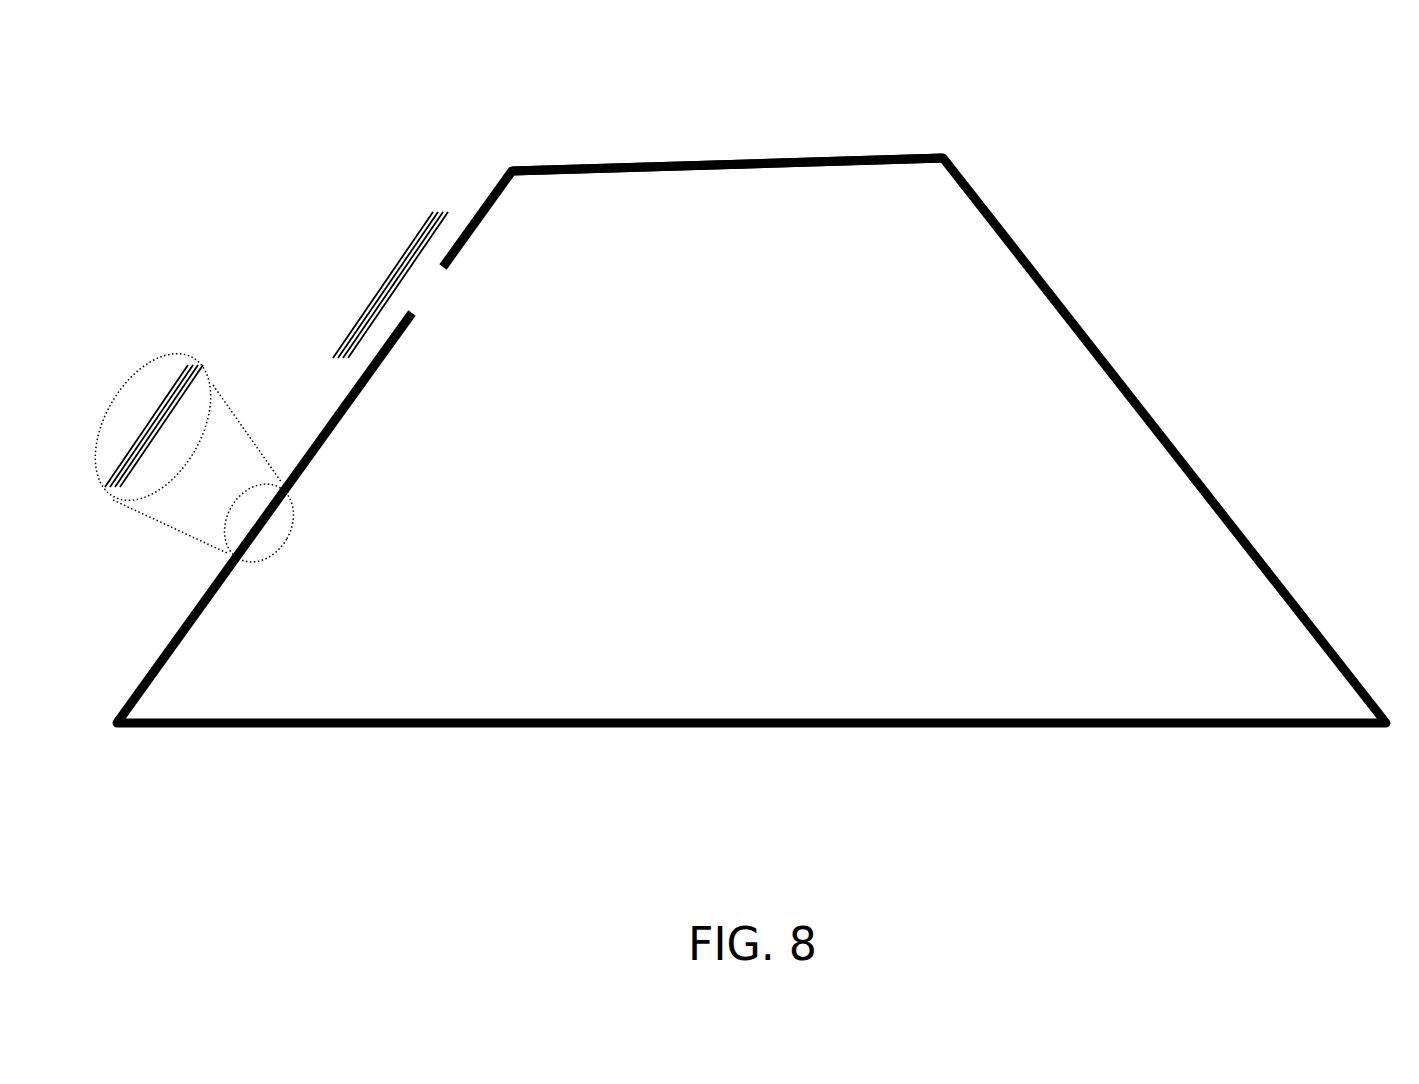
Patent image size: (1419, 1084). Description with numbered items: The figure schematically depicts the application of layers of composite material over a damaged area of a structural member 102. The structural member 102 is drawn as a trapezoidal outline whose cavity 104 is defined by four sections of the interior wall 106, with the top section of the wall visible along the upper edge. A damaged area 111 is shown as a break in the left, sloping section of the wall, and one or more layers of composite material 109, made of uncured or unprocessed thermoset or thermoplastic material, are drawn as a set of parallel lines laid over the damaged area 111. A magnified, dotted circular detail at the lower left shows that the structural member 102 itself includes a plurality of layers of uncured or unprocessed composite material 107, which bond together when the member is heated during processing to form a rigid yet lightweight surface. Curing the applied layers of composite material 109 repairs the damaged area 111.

The structural member 102 is at (1079, 92).
The cavity 104 is at (768, 478).
The interior wall 106 is at (715, 172).
The layers of uncured or unprocessed composite material 107 is at (147, 372).
The layers of composite material 109 is at (374, 243).
The damaged area 111 is at (453, 321).